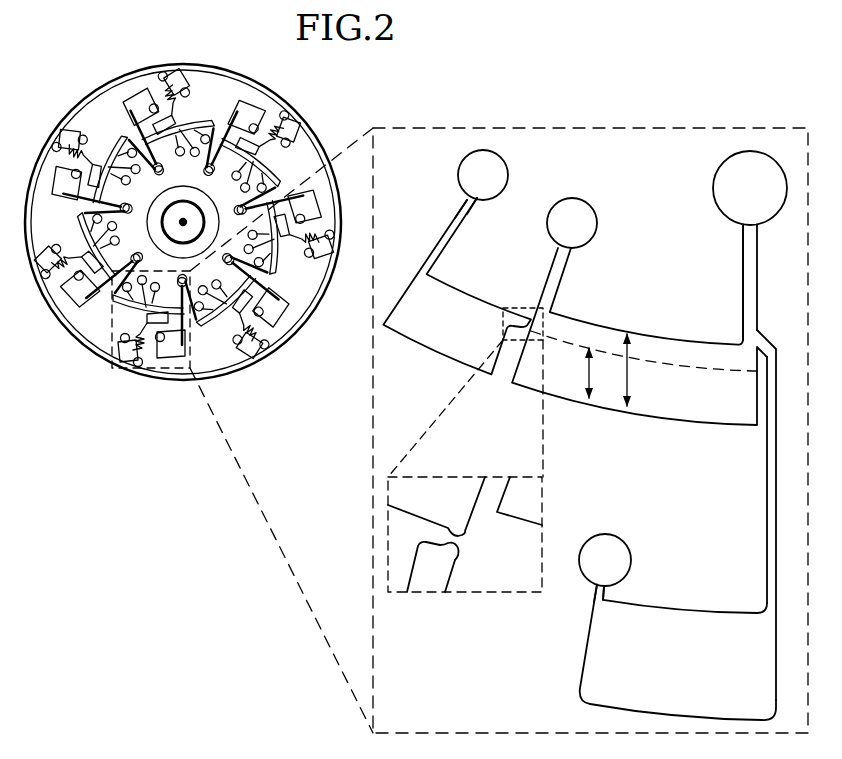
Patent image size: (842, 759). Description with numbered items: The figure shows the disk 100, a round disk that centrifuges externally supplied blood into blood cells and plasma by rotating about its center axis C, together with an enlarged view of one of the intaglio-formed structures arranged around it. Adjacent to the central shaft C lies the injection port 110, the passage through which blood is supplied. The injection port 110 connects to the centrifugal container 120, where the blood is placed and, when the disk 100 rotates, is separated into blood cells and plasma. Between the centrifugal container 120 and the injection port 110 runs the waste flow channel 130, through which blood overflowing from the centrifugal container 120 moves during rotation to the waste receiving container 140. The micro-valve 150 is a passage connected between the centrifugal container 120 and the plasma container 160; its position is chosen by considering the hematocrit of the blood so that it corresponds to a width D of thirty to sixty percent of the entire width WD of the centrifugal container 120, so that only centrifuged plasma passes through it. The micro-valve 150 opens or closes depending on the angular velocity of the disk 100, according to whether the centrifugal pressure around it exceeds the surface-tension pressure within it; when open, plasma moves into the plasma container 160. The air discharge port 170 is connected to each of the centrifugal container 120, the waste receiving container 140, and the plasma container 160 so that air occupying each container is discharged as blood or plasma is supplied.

The disk 100 is at (72, 96).
The center axis C is at (183, 222).
The injection port 110 is at (728, 178).
The centrifugal container 120 is at (662, 402).
The waste flow channel 130 is at (768, 346).
The waste receiving container 140 is at (695, 626).
The micro-valve 150 is at (530, 320).
The plasma container 160 is at (447, 343).
The air discharge port 170 is at (492, 164).
The width D is at (590, 366).
The entire width of the centrifugal container WD is at (628, 352).